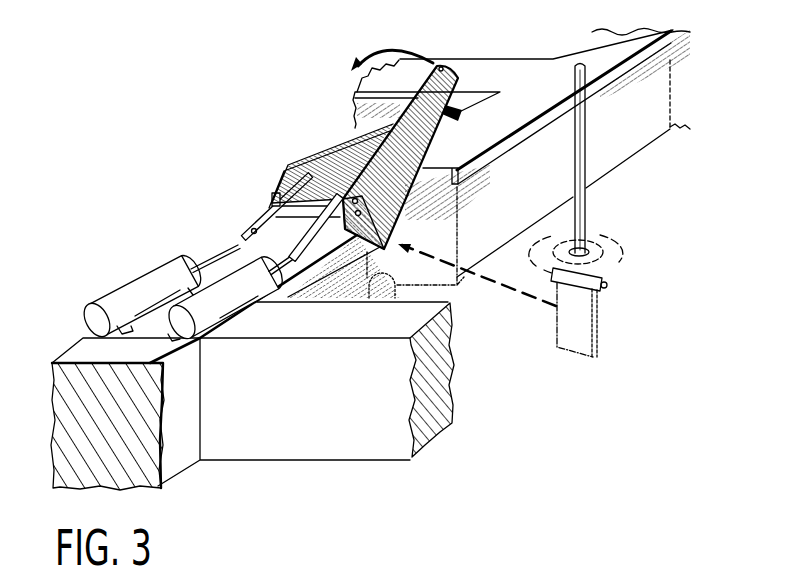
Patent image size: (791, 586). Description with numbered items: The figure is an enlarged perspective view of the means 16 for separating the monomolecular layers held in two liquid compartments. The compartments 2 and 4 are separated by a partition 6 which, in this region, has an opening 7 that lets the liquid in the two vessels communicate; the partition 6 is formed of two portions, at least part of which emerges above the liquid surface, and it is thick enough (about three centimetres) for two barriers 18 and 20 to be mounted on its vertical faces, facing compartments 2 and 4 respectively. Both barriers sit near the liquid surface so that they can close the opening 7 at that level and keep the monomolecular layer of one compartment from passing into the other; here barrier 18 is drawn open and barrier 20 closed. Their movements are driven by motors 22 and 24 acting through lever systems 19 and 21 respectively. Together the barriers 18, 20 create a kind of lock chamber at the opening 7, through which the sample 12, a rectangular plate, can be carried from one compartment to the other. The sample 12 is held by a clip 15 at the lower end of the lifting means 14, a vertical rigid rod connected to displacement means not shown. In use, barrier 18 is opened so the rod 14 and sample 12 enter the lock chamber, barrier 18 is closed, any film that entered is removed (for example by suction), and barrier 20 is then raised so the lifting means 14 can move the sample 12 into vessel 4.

The compartment 2 is at (660, 202).
The compartment 4 is at (63, 203).
The partition 6 is at (490, 124).
The opening 7 is at (397, 277).
The sample 12 is at (596, 355).
The lifting means 14 is at (576, 83).
The clip 15 is at (607, 285).
The means for separating the monomolecular layers 16 is at (290, 156).
The barrier 18 is at (422, 80).
The lever system 19 is at (313, 224).
The barrier 20 is at (338, 167).
The lever system 21 is at (243, 236).
The motor 22 is at (213, 308).
The motor 24 is at (122, 296).